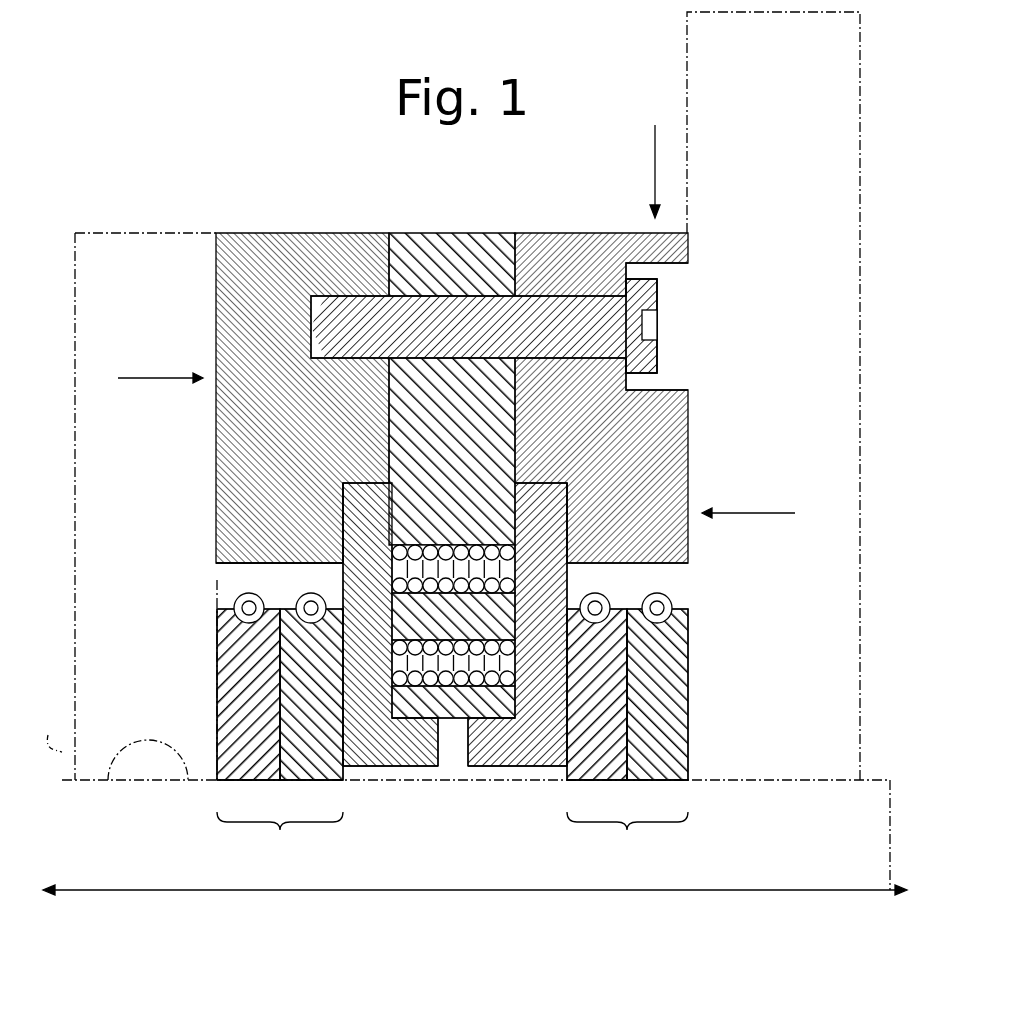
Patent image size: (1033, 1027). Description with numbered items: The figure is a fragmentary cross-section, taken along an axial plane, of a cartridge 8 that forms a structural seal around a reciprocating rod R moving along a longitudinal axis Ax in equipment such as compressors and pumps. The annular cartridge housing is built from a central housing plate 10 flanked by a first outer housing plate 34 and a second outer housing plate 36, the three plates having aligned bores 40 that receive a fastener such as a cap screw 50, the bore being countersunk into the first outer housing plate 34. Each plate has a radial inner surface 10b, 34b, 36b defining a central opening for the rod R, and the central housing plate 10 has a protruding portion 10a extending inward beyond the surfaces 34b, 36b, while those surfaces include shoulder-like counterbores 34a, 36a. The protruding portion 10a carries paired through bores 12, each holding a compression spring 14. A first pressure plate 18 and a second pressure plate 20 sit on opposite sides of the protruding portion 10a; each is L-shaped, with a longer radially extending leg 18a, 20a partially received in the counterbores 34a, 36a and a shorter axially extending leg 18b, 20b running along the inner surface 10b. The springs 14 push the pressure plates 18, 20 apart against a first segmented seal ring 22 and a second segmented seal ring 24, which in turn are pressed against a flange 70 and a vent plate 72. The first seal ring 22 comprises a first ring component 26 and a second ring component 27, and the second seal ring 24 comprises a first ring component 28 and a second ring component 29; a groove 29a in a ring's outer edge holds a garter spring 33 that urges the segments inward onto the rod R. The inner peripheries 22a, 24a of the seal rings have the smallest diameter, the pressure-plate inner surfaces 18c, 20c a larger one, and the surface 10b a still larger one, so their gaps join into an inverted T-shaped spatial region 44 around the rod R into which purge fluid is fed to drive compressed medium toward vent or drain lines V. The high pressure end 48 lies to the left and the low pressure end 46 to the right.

The cartridge 8 is at (656, 159).
The central housing plate 10 is at (405, 233).
The protruding portion 10a is at (400, 640).
The radial inner surface 10b is at (453, 766).
The through bores 12 is at (340, 580).
The compression spring 14 is at (340, 557).
The first pressure plate 18 is at (552, 766).
The radially extending leg 18a is at (400, 640).
The axially extending leg 18b is at (501, 766).
The radial inner surface 18c is at (518, 766).
The second pressure plate 20 is at (358, 766).
The radially extending leg 20a is at (370, 672).
The axially extending leg 20b is at (390, 766).
The radial inner surface 20c is at (408, 766).
The first segmented seal ring 22 is at (627, 731).
The radial inner periphery 22a is at (680, 782).
The second segmented seal ring 24 is at (280, 731).
The radial inner periphery 24a is at (238, 782).
The first ring component 26 is at (617, 703).
The second ring component 27 is at (677, 653).
The first ring component 28 is at (290, 733).
The second ring component 29 is at (237, 690).
The groove 29a is at (217, 627).
The garter spring 33 is at (670, 598).
The first outer housing plate 34 is at (638, 233).
The counterbore 34a is at (567, 500).
The radial inner surface 34b is at (657, 563).
The second outer housing plate 36 is at (270, 233).
The counterbore 36a is at (337, 500).
The radial inner surface 36b is at (277, 563).
The bore 40 is at (658, 388).
The inverted T-shaped spatial region 44 is at (455, 766).
The low pressure end 46 is at (758, 514).
The high pressure end 48 is at (151, 378).
The cap screw 50 is at (645, 310).
The flange 70 is at (692, 43).
The vent plate 72 is at (138, 250).
The reciprocating rod R is at (42, 725).
The vent and/or drain lines V is at (110, 786).
The longitudinal axis Ax is at (806, 890).